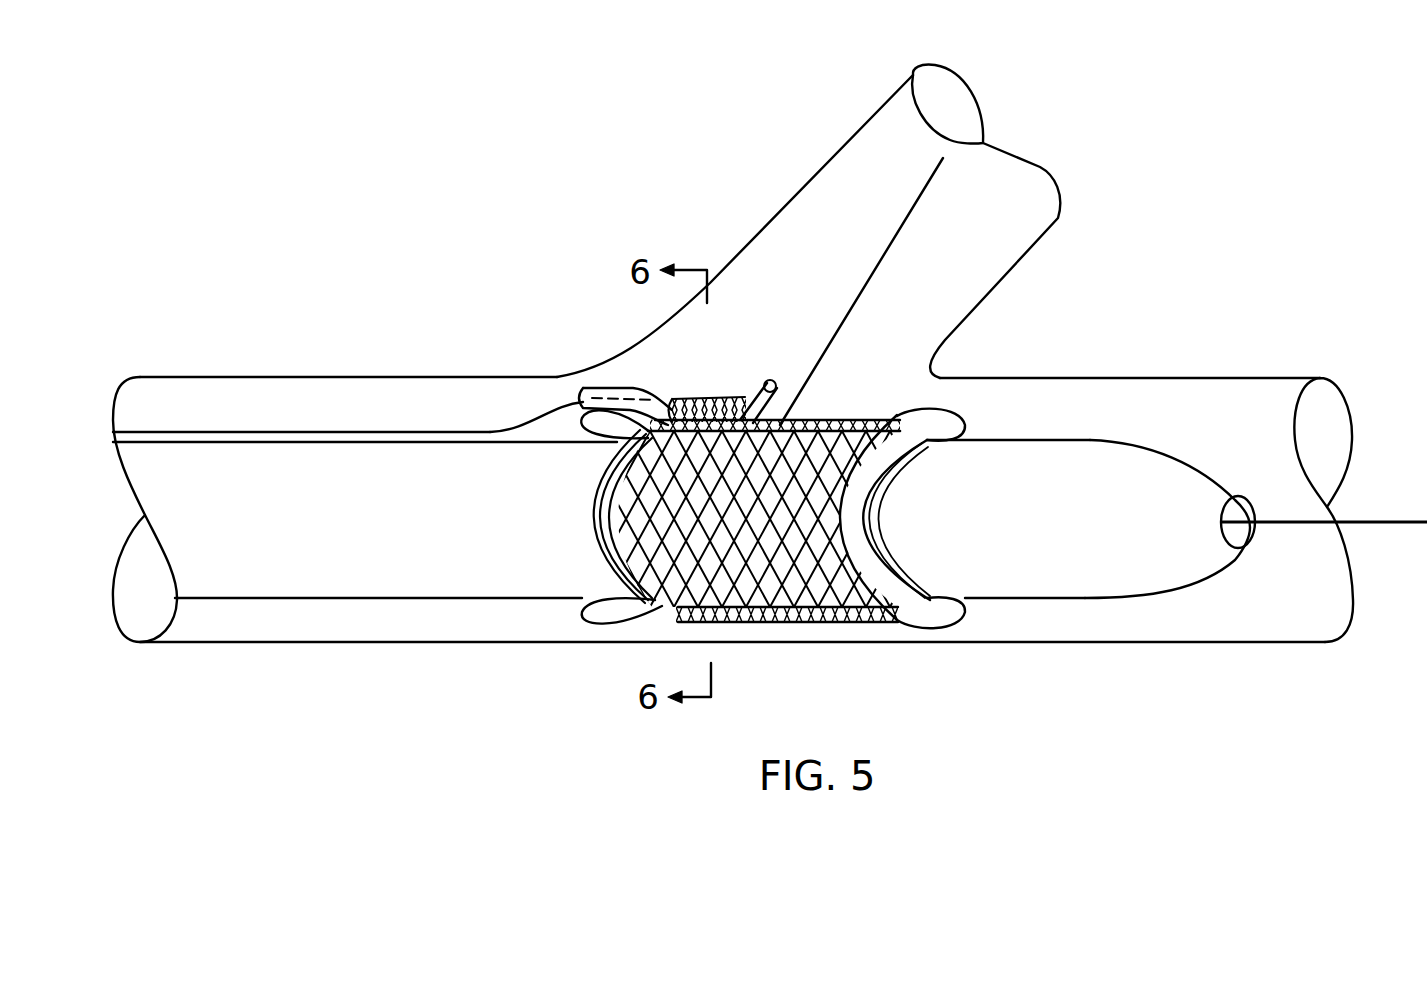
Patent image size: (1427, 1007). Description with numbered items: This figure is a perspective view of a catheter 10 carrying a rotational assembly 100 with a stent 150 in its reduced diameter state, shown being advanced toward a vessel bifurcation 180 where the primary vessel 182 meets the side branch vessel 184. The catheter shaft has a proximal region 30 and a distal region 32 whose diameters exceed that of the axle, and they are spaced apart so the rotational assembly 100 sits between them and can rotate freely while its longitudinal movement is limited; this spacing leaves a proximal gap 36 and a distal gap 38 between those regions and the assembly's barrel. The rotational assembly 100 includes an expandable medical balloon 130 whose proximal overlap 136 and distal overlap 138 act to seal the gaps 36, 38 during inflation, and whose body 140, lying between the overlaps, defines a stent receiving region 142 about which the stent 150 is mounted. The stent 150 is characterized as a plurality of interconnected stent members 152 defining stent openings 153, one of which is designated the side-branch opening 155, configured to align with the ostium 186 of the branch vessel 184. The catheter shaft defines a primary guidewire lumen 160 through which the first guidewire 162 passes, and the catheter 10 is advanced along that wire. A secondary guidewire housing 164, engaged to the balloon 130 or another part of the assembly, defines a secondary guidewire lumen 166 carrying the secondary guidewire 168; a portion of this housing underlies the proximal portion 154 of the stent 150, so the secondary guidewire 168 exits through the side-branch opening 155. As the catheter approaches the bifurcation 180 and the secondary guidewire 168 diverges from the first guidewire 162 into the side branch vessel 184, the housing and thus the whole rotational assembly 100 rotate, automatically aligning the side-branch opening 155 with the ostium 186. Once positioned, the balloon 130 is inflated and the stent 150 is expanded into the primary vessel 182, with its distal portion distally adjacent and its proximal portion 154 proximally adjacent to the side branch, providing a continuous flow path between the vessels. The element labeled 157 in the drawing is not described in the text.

The catheter 10 is at (357, 648).
The proximal region 30 is at (363, 443).
The distal region 32 is at (1180, 580).
The proximal gap 36 is at (588, 524).
The distal gap 38 is at (887, 557).
The rotational assembly 100 is at (738, 629).
The expandable medical balloon 130 is at (847, 418).
The proximal overlap 136 is at (580, 612).
The distal overlap 138 is at (960, 610).
The balloon body 140 is at (950, 427).
The stent receiving region 142 is at (787, 415).
The stent 150 is at (798, 626).
The stent members 152 is at (850, 612).
The stent openings 153 is at (803, 507).
The proximal portion of the stent 154 is at (697, 394).
The side-branch opening 155 is at (738, 391).
The stent end attachment 157 is at (893, 620).
The primary guidewire lumen 160 is at (1247, 534).
The first guidewire 162 is at (1366, 523).
The secondary guidewire housing 164 is at (600, 386).
The secondary guidewire lumen 166 is at (578, 395).
The secondary guidewire 168 is at (925, 184).
The vessel bifurcation 180 is at (746, 190).
The primary vessel 182 is at (455, 643).
The side branch vessel 184 is at (843, 147).
The ostium 186 is at (887, 350).